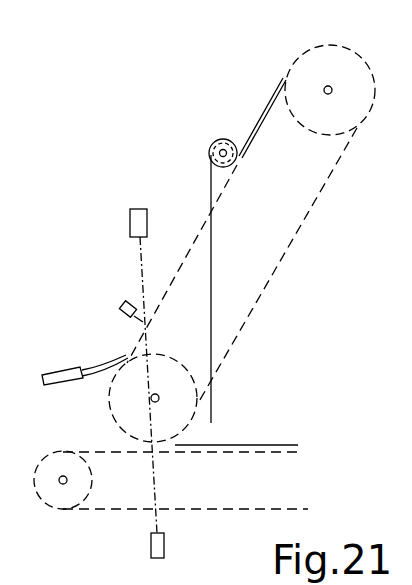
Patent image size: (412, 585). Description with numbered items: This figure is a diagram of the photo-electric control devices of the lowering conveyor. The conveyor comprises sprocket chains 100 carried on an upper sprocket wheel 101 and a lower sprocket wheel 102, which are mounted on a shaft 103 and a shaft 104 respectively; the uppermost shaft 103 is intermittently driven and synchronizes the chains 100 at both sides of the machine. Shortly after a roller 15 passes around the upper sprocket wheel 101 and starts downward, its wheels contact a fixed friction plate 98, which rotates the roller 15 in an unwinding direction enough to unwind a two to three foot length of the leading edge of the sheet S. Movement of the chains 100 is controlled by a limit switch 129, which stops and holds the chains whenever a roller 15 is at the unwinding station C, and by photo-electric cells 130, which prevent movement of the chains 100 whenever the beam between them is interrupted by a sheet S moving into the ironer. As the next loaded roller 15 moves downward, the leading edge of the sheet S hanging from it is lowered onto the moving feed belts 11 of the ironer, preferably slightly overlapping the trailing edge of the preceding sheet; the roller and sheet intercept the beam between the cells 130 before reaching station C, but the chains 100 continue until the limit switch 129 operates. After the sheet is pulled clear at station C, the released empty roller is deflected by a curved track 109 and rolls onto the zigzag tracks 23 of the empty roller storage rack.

The sprocket wheel 101 is at (327, 46).
The shaft 103 is at (350, 80).
The friction plate 98 is at (265, 106).
The roller 15 is at (209, 141).
The sheet S is at (214, 283).
The sprocket chain 100 is at (318, 197).
The sprocket wheel 102 is at (177, 358).
The shaft 104 is at (159, 399).
The photo-electric cell 130 is at (140, 212).
The limit switch 129 is at (122, 302).
The unwinding station C is at (121, 343).
The curved track 109 is at (88, 368).
The zigzag track 23 is at (56, 381).
The feed belt 11 is at (219, 455).